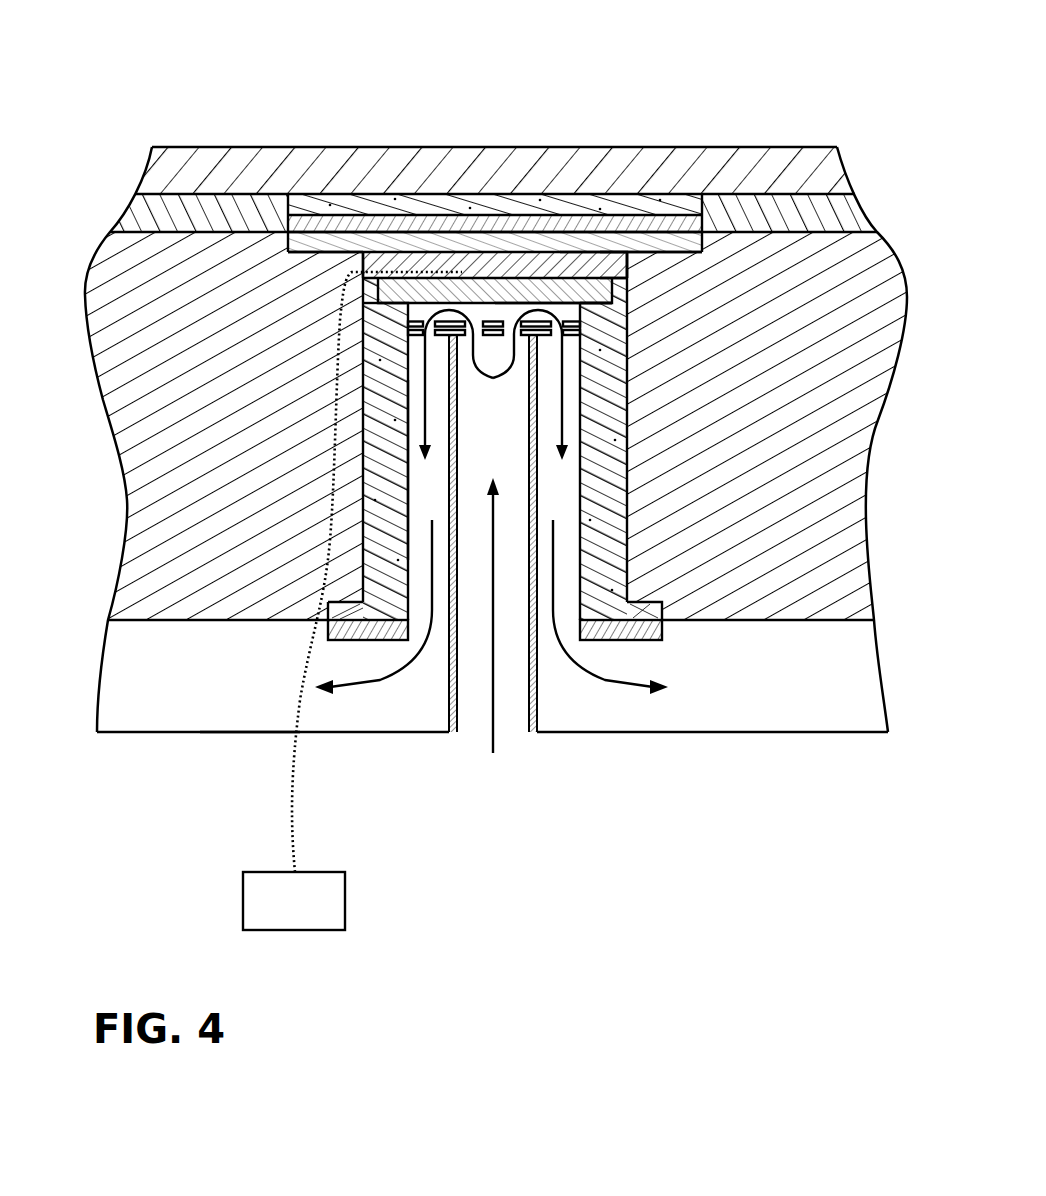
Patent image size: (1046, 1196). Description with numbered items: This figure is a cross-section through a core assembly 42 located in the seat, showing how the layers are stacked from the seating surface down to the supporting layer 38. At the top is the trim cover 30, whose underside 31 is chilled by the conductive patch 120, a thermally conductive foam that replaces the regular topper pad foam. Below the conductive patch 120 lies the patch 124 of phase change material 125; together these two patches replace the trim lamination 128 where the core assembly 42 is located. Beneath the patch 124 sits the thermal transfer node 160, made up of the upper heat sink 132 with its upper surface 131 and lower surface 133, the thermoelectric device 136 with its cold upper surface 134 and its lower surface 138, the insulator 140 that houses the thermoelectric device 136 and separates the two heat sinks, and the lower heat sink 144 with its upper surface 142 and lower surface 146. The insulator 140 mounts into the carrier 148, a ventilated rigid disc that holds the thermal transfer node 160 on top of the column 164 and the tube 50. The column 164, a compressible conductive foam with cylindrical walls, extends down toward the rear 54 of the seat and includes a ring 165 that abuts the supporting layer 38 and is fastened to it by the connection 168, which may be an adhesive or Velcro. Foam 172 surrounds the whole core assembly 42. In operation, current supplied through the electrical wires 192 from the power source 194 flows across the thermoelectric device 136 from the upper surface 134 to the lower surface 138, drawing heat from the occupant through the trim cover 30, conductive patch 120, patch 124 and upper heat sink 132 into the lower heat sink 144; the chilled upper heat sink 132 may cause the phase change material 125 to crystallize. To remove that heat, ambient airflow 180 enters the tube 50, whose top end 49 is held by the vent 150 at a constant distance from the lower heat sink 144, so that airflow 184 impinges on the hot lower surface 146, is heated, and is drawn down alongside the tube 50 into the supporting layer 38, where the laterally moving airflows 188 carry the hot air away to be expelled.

The trim cover 30 is at (704, 218).
The underside 31 is at (515, 290).
The supporting layer 38 is at (203, 682).
The core assembly 42 is at (292, 200).
The top end 49 is at (537, 338).
The tube 50 is at (448, 702).
The rear 54 is at (236, 733).
The conductive patch 120 is at (346, 210).
The patch 124 is at (768, 225).
The phase change material 125 is at (690, 230).
The trim lamination 128 is at (820, 176).
The upper surface 131 is at (556, 268).
The upper heat sink 132 is at (645, 270).
The lower surface 133 is at (612, 262).
The upper surface 134 is at (420, 222).
The thermoelectric device 136 is at (530, 243).
The lower surface 138 is at (466, 285).
The insulator 140 is at (287, 258).
The upper surface 142 is at (363, 256).
The lower heat sink 144 is at (365, 318).
The lower surface 146 is at (408, 400).
The carrier 148 is at (628, 323).
The vent 150 is at (457, 340).
The thermal transfer node 160 is at (642, 262).
The column 164 is at (612, 440).
The ring 165 is at (657, 608).
The connection 168 is at (663, 630).
The foam 172 is at (790, 505).
The ambient airflow 180 is at (493, 707).
The airflow 184 is at (493, 378).
The airflows 188 is at (377, 688).
The electrical wires 192 is at (296, 762).
The power source 194 is at (362, 895).